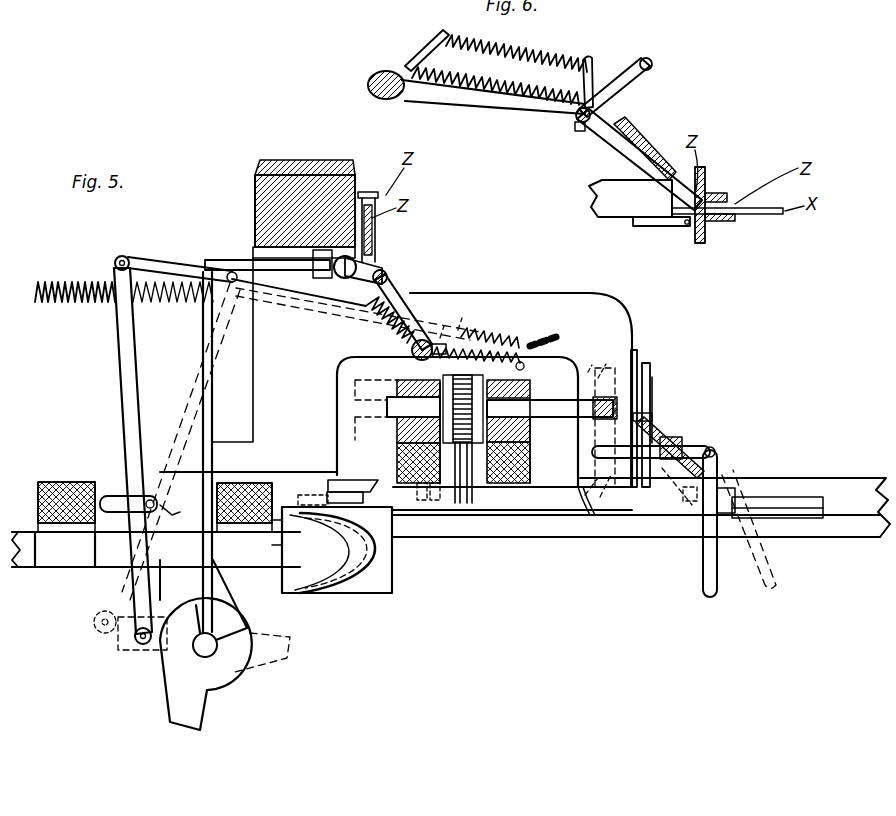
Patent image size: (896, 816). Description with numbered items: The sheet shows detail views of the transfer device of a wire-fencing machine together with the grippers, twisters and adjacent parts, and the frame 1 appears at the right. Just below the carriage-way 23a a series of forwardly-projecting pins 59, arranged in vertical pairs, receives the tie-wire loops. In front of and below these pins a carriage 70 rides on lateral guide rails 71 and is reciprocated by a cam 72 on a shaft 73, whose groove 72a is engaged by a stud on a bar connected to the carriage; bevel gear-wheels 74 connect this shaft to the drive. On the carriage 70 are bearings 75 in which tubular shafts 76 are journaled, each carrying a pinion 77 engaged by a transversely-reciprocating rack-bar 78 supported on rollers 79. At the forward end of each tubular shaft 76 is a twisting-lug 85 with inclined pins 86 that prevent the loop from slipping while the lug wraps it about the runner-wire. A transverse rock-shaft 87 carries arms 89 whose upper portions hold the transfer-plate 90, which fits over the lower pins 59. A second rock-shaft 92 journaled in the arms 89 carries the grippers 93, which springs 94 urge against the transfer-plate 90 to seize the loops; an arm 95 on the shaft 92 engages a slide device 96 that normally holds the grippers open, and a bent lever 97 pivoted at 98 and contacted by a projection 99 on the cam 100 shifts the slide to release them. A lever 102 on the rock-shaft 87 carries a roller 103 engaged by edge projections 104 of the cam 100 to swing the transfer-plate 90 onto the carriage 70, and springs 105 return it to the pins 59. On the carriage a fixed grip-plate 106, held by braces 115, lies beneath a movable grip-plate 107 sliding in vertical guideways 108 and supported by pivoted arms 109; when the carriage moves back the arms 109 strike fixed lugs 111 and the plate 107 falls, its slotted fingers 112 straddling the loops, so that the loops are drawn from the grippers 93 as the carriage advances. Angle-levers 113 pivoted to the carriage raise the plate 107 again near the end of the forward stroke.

In FIG. 5, the base frame 1 is at (838, 490).
In FIG. 5, the carriage-way 23a is at (300, 172).
In FIG. 5, the pins 59 is at (378, 197).
In FIG. 5, the carriage 70 is at (536, 440).
In FIG. 5, the guide rails 71 is at (289, 412).
In FIG. 5, the cam 72 is at (332, 550).
In FIG. 5, the groove 72a is at (336, 592).
In FIG. 5, the shaft 73 is at (108, 548).
In FIG. 5, the bevel gear-wheels 74 is at (383, 478).
In FIG. 5, the bearings 75 is at (540, 395).
In FIG. 6, the tubular shafts 76 is at (586, 212).
In FIG. 5, the tubular shafts 76 is at (387, 407).
In FIG. 5, the pinion 77 is at (473, 372).
In FIG. 5, the rack-bar 78 is at (462, 505).
In FIG. 5, the rollers 79 is at (478, 494).
In FIG. 6, the twisting-lug 85 is at (660, 228).
In FIG. 5, the twisting-lug 85 is at (590, 426).
In FIG. 6, the inclined pins 86 is at (686, 228).
In FIG. 6, the rock-shaft 87 is at (379, 95).
In FIG. 6, the arms 89 is at (455, 108).
In FIG. 5, the arms 89 is at (407, 312).
In FIG. 6, the transfer-plate 90 is at (630, 128).
In FIG. 5, the transfer-plate 90 is at (378, 240).
In FIG. 6, the second rock-shaft 92 is at (578, 128).
In FIG. 6, the grippers 93 is at (644, 150).
In FIG. 5, the grippers 93 is at (376, 255).
In FIG. 6, the springs 94 is at (510, 103).
In FIG. 6, the arm 95 is at (648, 60).
In FIG. 5, the arm 95 is at (358, 287).
In FIG. 5, the slide device 96 is at (342, 276).
In FIG. 5, the bent lever 97 is at (220, 260).
In FIG. 5, the pivot 98 is at (201, 560).
In FIG. 5, the projection 99 is at (221, 622).
In FIG. 5, the cam 100 is at (206, 644).
In FIG. 5, the lever 102 is at (137, 352).
In FIG. 5, the roller 103 is at (140, 645).
In FIG. 5, the edge projections 104 is at (225, 592).
In FIG. 5, the springs 105 is at (58, 305).
In FIG. 6, the fixed grip-plate 106 is at (707, 238).
In FIG. 5, the fixed grip-plate 106 is at (655, 412).
In FIG. 6, the movable grip-plate 107 is at (706, 182).
In FIG. 5, the movable grip-plate 107 is at (650, 367).
In FIG. 5, the vertical guideways 108 is at (654, 392).
In FIG. 5, the arms 109 is at (600, 372).
In FIG. 5, the fixed blocks or lugs 111 is at (590, 520).
In FIG. 6, the slotted fingers 112 is at (712, 190).
In FIG. 5, the slotted fingers 112 is at (636, 350).
In FIG. 5, the angle-levers 113 is at (714, 470).
In FIG. 5, the braces 115 is at (662, 440).